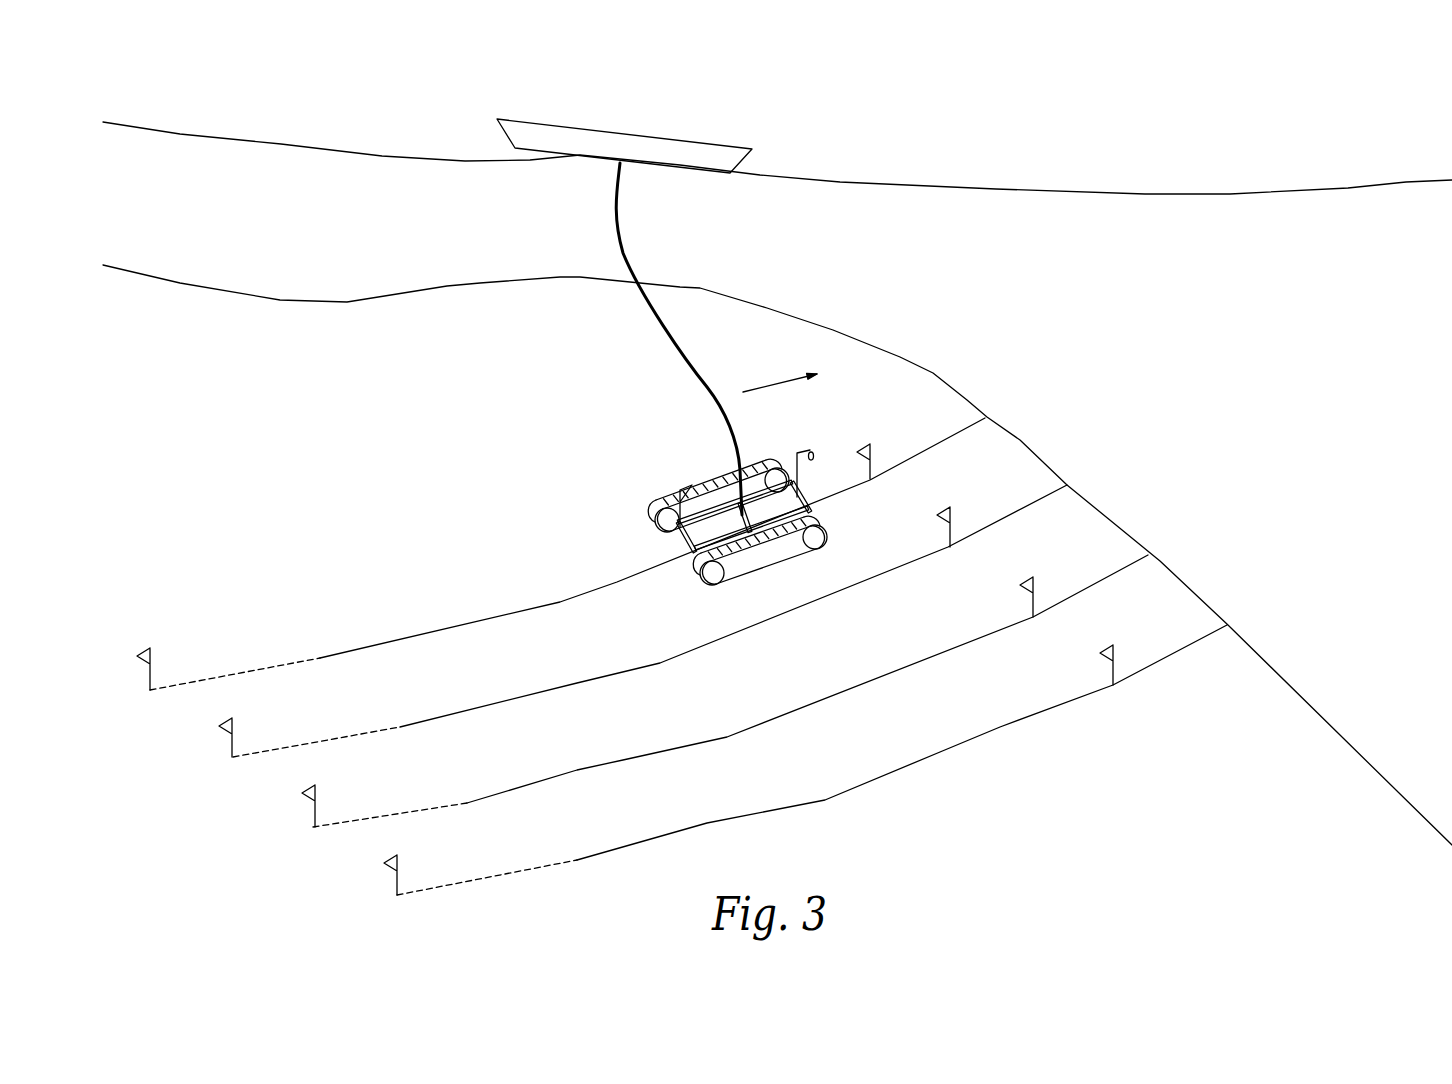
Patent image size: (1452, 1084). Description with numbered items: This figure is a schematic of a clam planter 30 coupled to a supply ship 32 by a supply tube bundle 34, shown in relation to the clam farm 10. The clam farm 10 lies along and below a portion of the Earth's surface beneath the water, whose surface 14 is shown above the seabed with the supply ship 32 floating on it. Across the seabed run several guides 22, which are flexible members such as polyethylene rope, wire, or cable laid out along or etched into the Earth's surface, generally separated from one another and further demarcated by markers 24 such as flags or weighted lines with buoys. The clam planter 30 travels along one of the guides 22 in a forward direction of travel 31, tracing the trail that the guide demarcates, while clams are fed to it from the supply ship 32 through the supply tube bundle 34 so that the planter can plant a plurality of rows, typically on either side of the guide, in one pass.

The clam farm 10 is at (480, 467).
The water surface 14 is at (1141, 194).
The guides 22 is at (531, 607).
The markers 24 is at (143, 655).
The clam planter 30 is at (652, 442).
The forward direction of travel 31 is at (780, 380).
The supply ship 32 is at (550, 92).
The supply tube bundle 34 is at (615, 222).